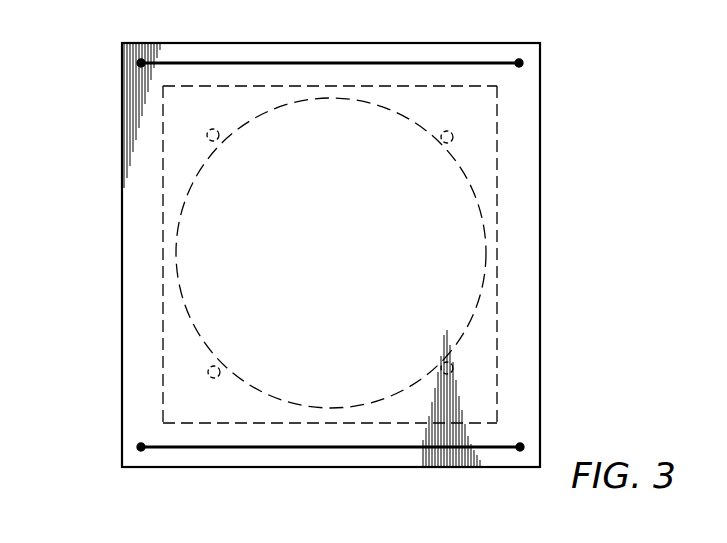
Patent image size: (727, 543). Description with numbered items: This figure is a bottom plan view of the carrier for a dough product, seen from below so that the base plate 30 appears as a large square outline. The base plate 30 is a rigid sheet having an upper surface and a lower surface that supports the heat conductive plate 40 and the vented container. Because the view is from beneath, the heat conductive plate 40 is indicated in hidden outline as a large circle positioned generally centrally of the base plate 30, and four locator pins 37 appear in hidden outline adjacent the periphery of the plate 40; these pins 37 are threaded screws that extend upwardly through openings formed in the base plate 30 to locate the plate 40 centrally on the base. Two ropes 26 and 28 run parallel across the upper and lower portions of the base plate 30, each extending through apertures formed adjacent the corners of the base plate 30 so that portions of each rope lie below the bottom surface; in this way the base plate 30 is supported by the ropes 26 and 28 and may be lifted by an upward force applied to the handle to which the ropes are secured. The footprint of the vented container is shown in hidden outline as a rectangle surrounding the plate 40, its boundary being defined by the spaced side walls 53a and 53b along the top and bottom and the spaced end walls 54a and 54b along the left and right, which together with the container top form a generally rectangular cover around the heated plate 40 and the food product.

The rope 26 is at (368, 63).
The rope 28 is at (493, 441).
The base plate 30 is at (530, 148).
The locator pins 37 is at (221, 140).
The heat conductive plate 40 is at (228, 272).
The side wall 53a is at (299, 84).
The side wall 53b is at (192, 424).
The end wall 54a is at (497, 250).
The end wall 54b is at (163, 248).